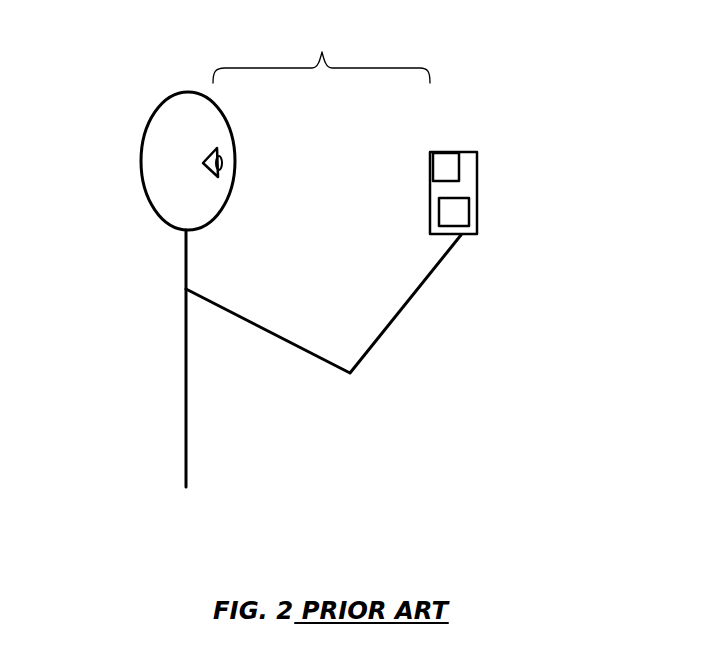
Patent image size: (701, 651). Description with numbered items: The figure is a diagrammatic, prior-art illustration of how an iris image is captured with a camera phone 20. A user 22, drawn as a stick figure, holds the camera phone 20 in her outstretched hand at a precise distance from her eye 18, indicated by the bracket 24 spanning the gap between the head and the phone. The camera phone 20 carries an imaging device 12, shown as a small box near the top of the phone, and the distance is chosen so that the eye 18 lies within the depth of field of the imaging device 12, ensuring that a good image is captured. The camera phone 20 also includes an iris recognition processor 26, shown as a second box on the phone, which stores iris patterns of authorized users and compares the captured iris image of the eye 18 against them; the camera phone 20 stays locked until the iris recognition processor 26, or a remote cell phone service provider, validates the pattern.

The imaging device 12 is at (459, 163).
The eye 18 is at (203, 162).
The camera phone 20 is at (477, 226).
The user 22 is at (132, 290).
The distance between eye and device 24 is at (321, 55).
The iris recognition processor 26 is at (469, 210).